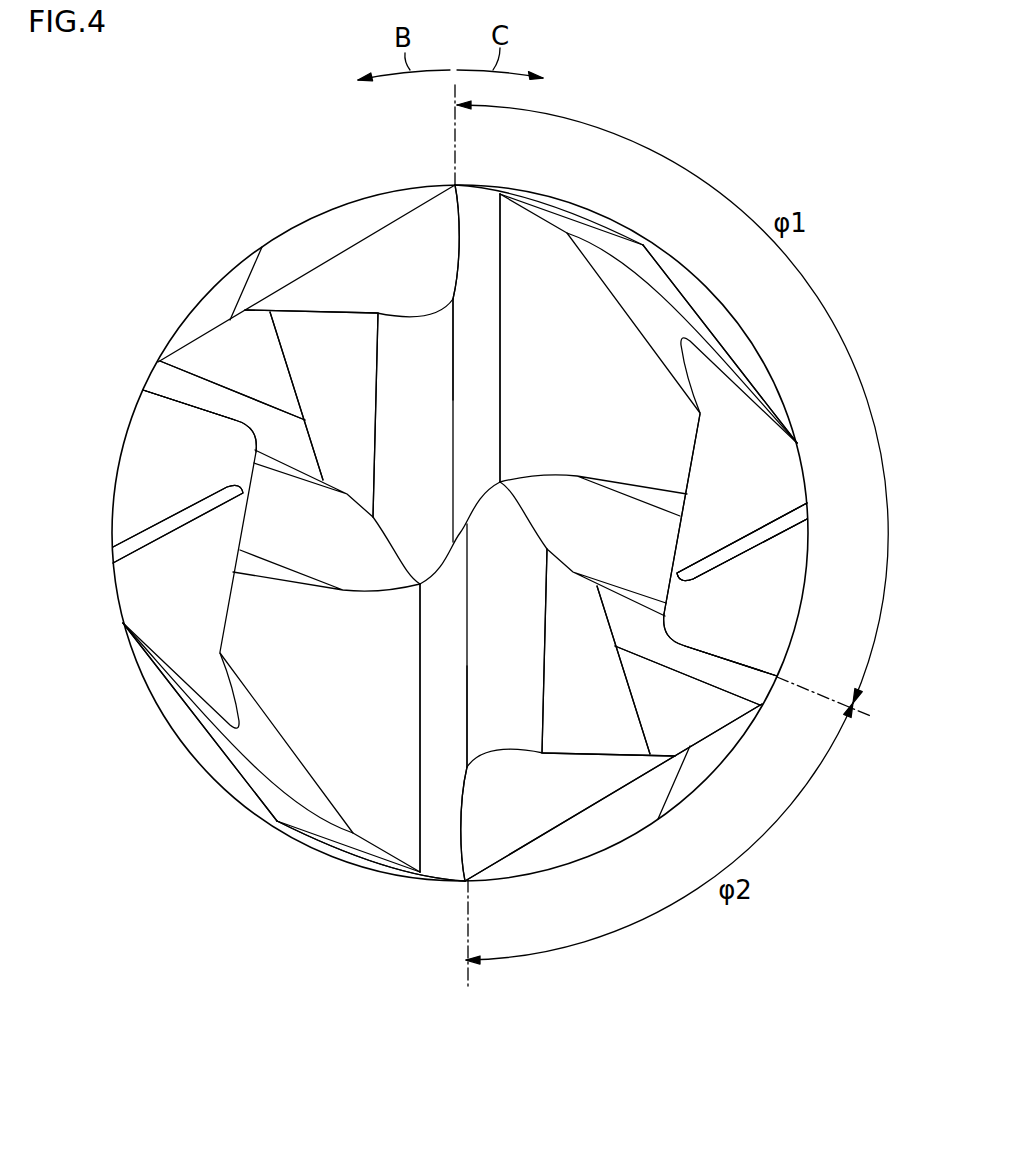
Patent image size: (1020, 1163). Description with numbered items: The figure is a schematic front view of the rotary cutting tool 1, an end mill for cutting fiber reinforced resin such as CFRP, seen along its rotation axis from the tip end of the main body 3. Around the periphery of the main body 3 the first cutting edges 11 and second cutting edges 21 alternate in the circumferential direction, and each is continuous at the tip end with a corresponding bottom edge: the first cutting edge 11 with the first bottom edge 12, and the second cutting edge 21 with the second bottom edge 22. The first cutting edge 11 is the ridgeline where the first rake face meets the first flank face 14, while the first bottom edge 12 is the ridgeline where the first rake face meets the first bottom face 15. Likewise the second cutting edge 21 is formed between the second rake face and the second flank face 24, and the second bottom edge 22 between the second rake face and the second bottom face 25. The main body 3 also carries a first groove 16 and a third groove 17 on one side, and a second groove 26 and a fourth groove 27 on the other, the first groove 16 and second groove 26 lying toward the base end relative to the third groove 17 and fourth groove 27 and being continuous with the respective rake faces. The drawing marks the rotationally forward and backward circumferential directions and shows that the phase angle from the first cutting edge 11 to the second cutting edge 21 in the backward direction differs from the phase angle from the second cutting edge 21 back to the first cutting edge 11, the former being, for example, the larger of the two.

The rotary cutting tool 1 is at (670, 140).
The main body 3 is at (348, 722).
The first cutting edge 11 is at (457, 185).
The first bottom edge 12 is at (455, 233).
The first flank face 14 is at (407, 880).
The first bottom face 15 is at (473, 327).
The first groove 16 is at (410, 253).
The third groove 17 is at (413, 390).
The second cutting edge 21 is at (145, 390).
The second bottom edge 22 is at (203, 410).
The second flank face 24 is at (760, 697).
The second bottom face 25 is at (187, 387).
The second groove 26 is at (780, 567).
The fourth groove 27 is at (300, 535).